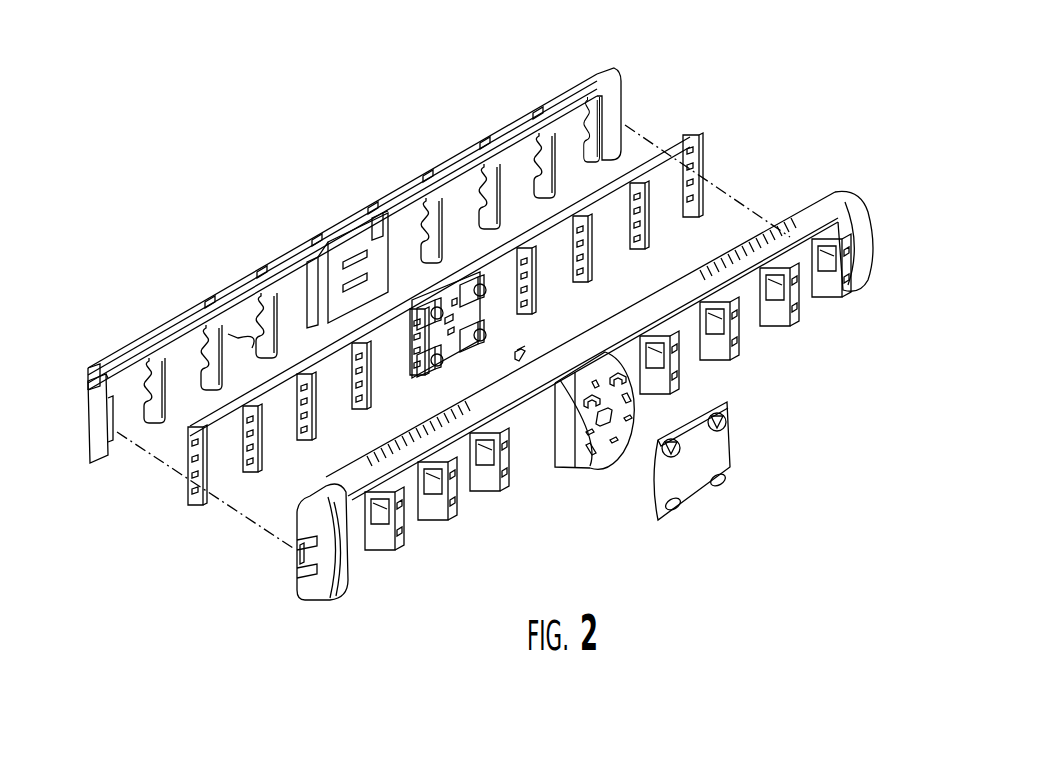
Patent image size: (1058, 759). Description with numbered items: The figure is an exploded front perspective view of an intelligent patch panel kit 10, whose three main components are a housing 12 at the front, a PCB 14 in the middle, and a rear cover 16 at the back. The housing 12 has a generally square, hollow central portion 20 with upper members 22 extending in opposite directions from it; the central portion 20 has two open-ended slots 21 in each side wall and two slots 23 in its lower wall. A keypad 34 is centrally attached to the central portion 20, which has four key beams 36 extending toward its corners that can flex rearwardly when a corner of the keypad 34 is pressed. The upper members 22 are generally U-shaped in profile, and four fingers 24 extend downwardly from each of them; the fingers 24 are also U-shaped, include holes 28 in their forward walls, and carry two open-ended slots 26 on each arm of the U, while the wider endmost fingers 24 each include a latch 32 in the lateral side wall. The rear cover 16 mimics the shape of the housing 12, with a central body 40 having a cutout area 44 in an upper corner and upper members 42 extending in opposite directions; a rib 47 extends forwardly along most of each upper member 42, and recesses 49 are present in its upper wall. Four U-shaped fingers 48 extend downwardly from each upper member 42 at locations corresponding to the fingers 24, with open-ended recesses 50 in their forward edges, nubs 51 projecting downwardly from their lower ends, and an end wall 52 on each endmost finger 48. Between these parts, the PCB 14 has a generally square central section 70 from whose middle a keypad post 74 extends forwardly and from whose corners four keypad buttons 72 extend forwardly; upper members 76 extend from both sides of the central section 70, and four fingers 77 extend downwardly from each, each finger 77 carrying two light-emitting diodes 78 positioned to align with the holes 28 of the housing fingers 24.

The intelligent patch panel kit 10 is at (783, 150).
The housing 12 is at (838, 198).
The PCB 14 is at (663, 158).
The rear cover 16 is at (562, 88).
The central portion 20 is at (568, 456).
The open-ended slots 21 is at (537, 450).
The upper members 22 is at (398, 458).
The slots 23 is at (480, 472).
The fingers 24 is at (377, 550).
The open-ended slots 26 is at (755, 312).
The holes 28 is at (672, 380).
The latch 32 is at (310, 563).
The keypad 34 is at (693, 487).
The key beams 36 is at (633, 435).
The central body 40 is at (330, 258).
The upper members 42 is at (232, 292).
The cutout area 44 is at (374, 232).
The rib 47 is at (115, 372).
The fingers 48 is at (153, 380).
The recesses 49 is at (482, 142).
The open-ended recesses 50 is at (223, 332).
The nubs 51 is at (152, 428).
The end wall 52 is at (97, 454).
The central section 70 is at (484, 312).
The keypad buttons 72 is at (476, 285).
The keypad post 74 is at (458, 350).
The upper members 76 is at (377, 320).
The fingers 77 is at (242, 474).
The light-emitting diodes (LEDs) 78 is at (195, 462).